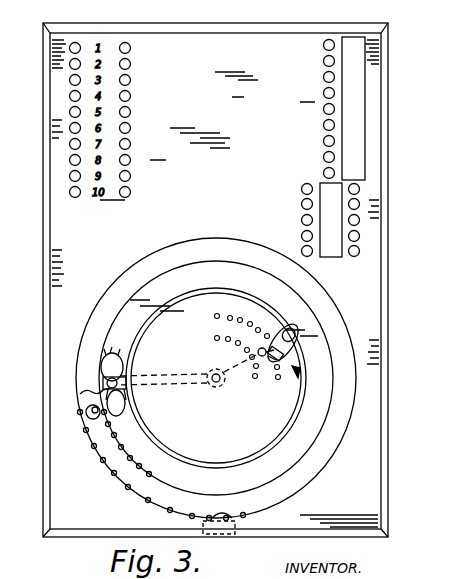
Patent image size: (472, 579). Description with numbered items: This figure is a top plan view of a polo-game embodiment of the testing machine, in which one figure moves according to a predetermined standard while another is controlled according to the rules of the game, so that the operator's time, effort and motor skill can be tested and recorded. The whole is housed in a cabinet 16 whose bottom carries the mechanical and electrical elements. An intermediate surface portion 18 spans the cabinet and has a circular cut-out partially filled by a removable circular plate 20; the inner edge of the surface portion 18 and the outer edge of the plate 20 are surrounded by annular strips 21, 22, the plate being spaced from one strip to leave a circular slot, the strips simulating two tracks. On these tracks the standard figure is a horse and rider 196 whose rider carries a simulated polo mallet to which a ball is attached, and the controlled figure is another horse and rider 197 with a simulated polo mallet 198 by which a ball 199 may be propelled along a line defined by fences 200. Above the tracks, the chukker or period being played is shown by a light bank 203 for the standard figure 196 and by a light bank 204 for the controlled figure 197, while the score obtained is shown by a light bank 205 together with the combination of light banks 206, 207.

The cabinet 16 is at (388, 212).
The intermediate surface portion 18 is at (219, 188).
The circular plate 20 is at (200, 337).
The annular strip 21 is at (253, 288).
The annular strip 22 is at (291, 280).
The horse and rider 196 is at (302, 360).
The horse and rider 197 is at (127, 360).
The simulated polo mallet 198 is at (85, 397).
The ball 199 is at (88, 418).
The fences 200 is at (137, 495).
The light bank 203 is at (78, 198).
The light bank 204 is at (129, 197).
The light bank 205 is at (323, 62).
The light bank 206 is at (302, 186).
The light bank 207 is at (357, 257).